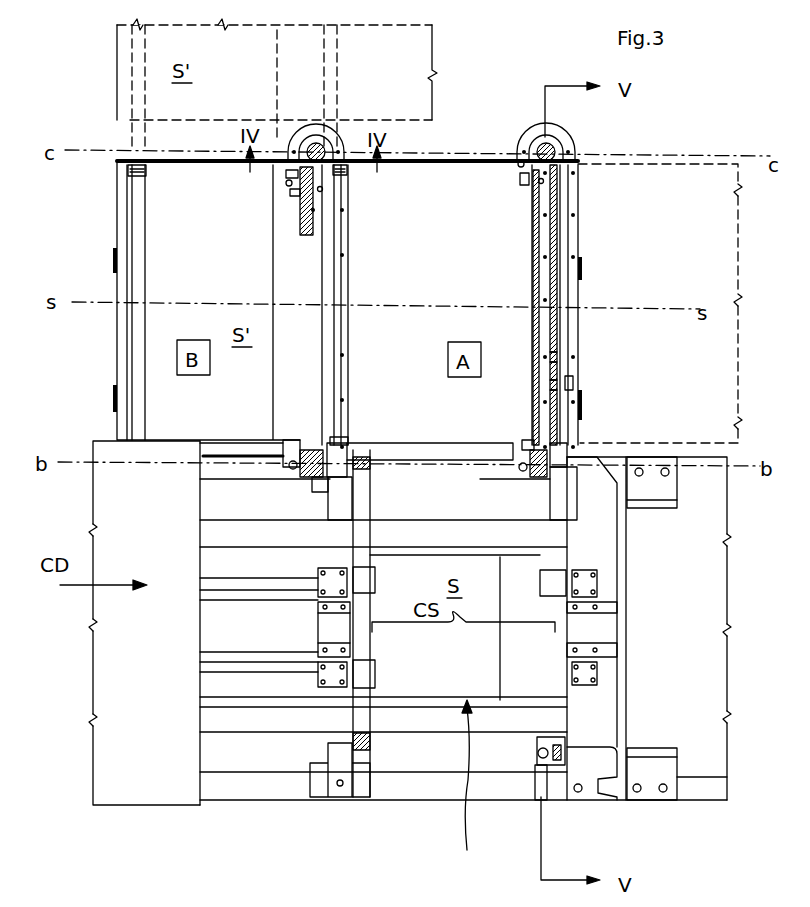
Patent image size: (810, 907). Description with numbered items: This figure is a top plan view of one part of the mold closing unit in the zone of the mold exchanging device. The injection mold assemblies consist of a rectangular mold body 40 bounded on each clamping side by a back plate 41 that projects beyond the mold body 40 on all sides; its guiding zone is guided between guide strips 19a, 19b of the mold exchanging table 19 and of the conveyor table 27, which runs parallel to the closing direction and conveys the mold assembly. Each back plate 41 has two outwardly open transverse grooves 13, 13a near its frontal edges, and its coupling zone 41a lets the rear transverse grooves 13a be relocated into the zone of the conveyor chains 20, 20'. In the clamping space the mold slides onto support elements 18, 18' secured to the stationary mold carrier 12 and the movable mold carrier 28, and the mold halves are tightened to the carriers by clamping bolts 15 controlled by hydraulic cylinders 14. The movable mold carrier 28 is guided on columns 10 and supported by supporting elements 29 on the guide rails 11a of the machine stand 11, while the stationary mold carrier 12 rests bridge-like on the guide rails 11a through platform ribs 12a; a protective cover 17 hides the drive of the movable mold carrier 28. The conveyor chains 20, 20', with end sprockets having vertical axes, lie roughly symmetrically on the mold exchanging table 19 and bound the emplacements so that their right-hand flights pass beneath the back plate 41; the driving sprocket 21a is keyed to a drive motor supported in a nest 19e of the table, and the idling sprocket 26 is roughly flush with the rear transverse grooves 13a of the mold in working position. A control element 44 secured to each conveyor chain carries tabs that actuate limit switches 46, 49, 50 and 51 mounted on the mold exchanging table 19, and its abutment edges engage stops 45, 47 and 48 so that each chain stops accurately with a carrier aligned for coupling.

The columns 10 is at (213, 532).
The machine stand 11 is at (711, 760).
The guide rails 11a is at (443, 787).
The stationary mold carrier 12 is at (587, 723).
The platform ribs 12a is at (660, 460).
The frontal transverse groove 13 is at (320, 440).
The rear transverse groove 13a is at (132, 173).
The hydraulic cylinders 14 is at (330, 577).
The clamping bolts 15 is at (370, 580).
The protective cover 17 is at (152, 750).
The support element 18 is at (530, 619).
The support element 18' is at (311, 499).
The mold exchanging table 19 is at (469, 237).
The guide strip 19a is at (537, 248).
The guide strip 19b is at (343, 370).
The nest 19e is at (338, 140).
The conveyor chain 20 is at (580, 305).
The conveyor chain 20' is at (275, 250).
The driving sprocket 21a is at (297, 133).
The idling sprocket 26 is at (337, 437).
The conveyor table 27 is at (404, 83).
The movable mold carrier 28 is at (337, 698).
The supporting elements 29 is at (318, 783).
The mold body 40 is at (456, 793).
The back plate 41 is at (140, 57).
The coupling zone 41a is at (367, 508).
The control element 44 is at (293, 173).
The stop 45 is at (300, 467).
The limit switch 46 is at (290, 455).
The stop 47 is at (293, 182).
The stop 48 is at (287, 185).
The limit switch 49 is at (320, 189).
The limit switch 50 is at (548, 358).
The limit switch 51 is at (548, 383).